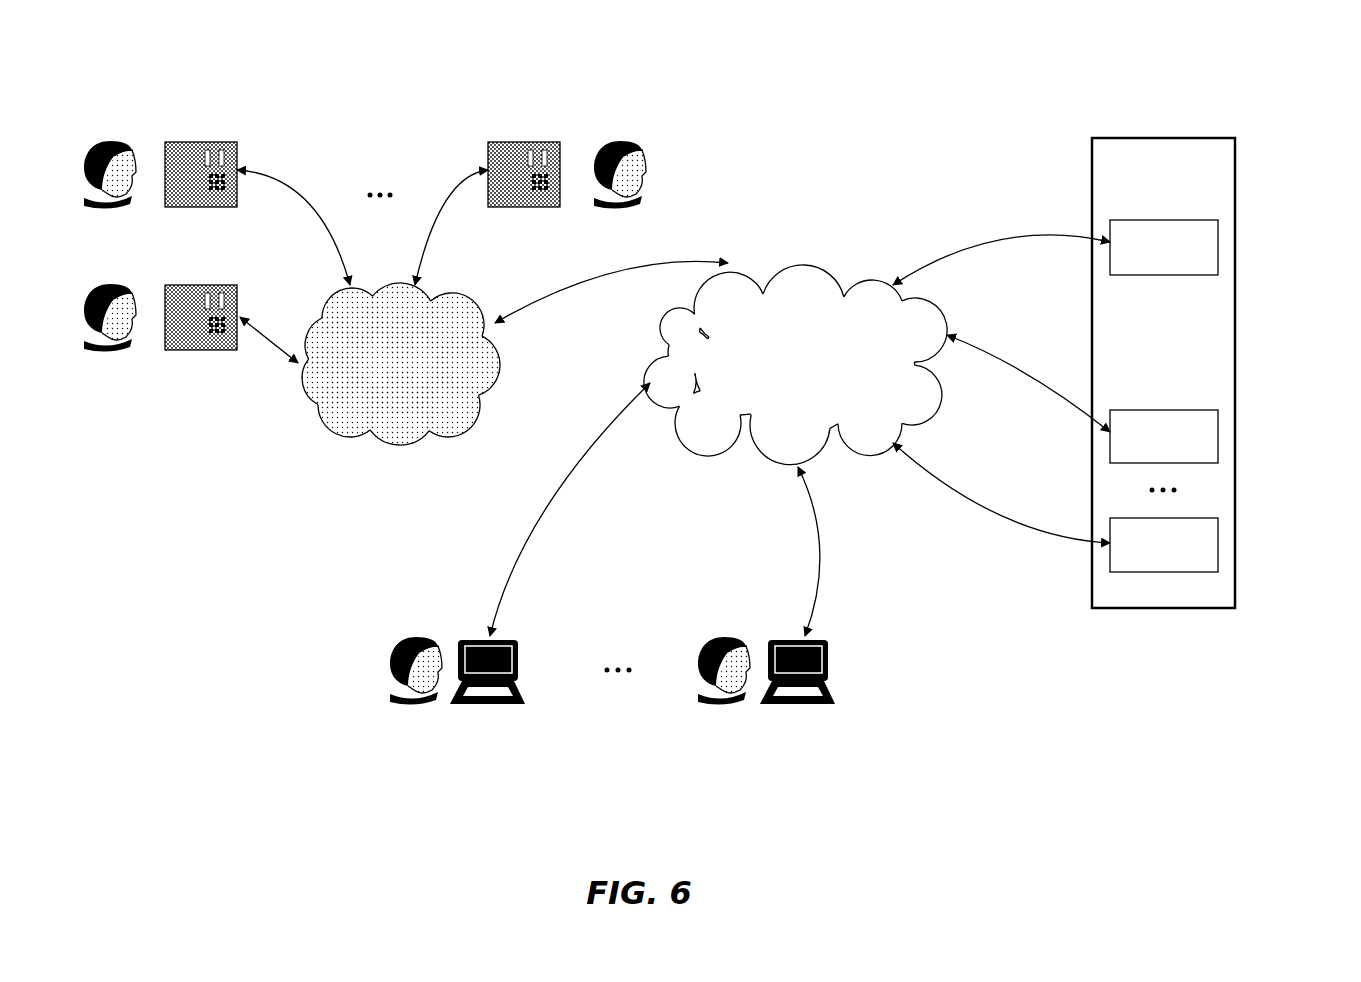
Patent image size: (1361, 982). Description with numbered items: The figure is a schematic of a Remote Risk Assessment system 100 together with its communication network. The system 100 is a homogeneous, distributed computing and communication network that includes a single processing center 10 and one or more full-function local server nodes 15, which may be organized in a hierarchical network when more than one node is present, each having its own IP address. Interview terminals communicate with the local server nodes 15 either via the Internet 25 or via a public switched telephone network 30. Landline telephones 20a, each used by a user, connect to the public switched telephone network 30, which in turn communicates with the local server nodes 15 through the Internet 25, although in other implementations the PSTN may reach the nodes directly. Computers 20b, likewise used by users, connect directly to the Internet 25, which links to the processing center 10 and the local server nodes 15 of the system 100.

The Remote Risk Assessment system 100 is at (147, 523).
The public switched telephone network 30 is at (300, 386).
The Internet 25 is at (798, 265).
The telephones 20a is at (200, 118).
The computers 20b is at (488, 727).
The processing center 10 is at (1218, 247).
The local server nodes 15 is at (1218, 437).